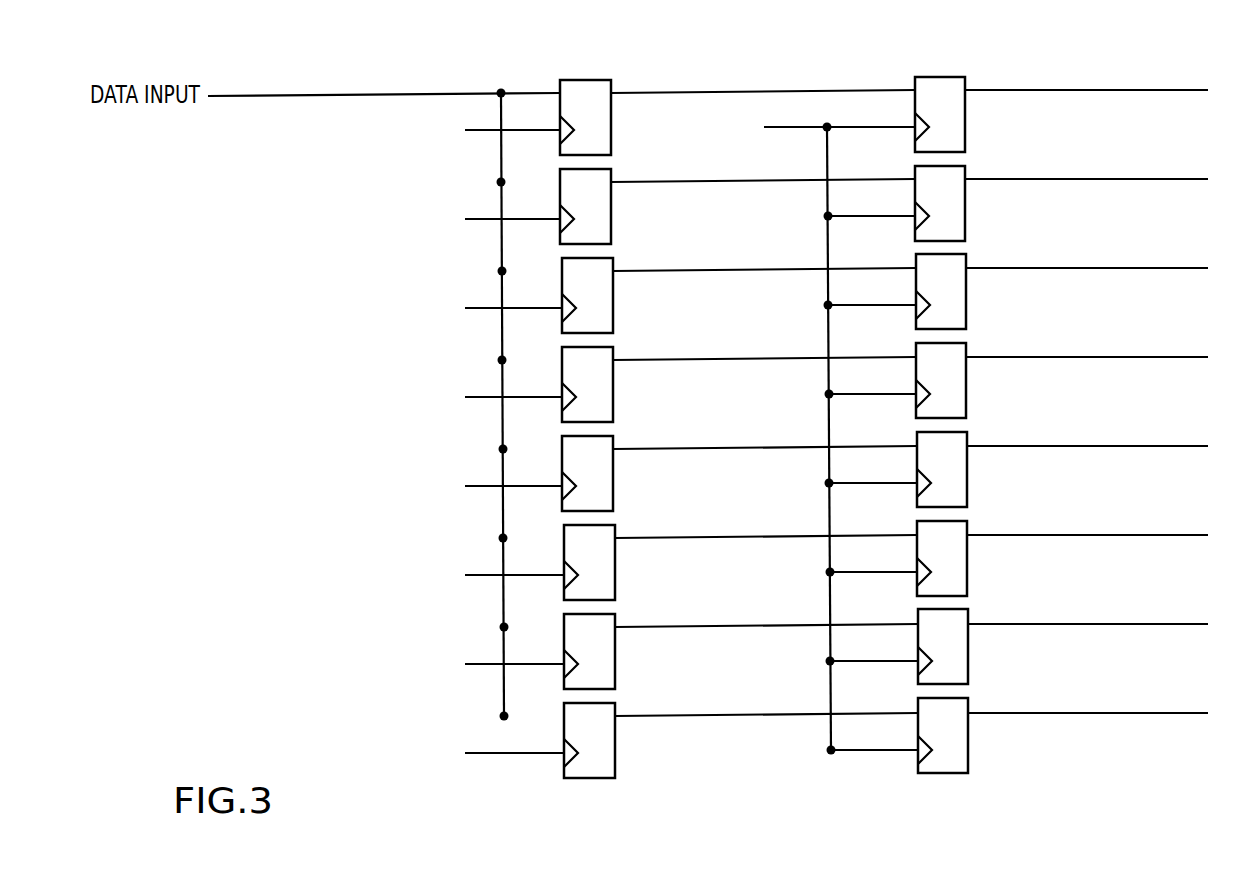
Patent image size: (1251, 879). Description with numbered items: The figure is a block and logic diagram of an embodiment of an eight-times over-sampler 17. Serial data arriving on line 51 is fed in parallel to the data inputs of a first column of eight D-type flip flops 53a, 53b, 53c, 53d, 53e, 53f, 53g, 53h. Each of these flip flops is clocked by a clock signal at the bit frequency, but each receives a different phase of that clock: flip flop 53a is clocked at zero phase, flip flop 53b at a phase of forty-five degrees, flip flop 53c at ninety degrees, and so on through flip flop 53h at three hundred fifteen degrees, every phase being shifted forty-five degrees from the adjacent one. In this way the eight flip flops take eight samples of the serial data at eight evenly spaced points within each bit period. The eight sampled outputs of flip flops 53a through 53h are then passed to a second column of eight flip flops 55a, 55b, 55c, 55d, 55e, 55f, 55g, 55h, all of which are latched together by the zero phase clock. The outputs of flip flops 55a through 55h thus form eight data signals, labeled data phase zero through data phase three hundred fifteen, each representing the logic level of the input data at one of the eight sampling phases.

The over-sampler 17 is at (270, 599).
The line 51 is at (291, 96).
The flip flop 53a is at (580, 80).
The flip flop 53b is at (611, 215).
The flip flop 53c is at (613, 304).
The flip flop 53d is at (613, 393).
The flip flop 53e is at (613, 482).
The flip flop 53f is at (615, 571).
The flip flop 53g is at (615, 660).
The flip flop 53h is at (615, 749).
The flip flop 55a is at (965, 118).
The flip flop 55b is at (965, 215).
The flip flop 55c is at (966, 307).
The flip flop 55d is at (966, 387).
The flip flop 55e is at (967, 468).
The flip flop 55f is at (967, 563).
The flip flop 55g is at (968, 658).
The flip flop 55h is at (968, 757).